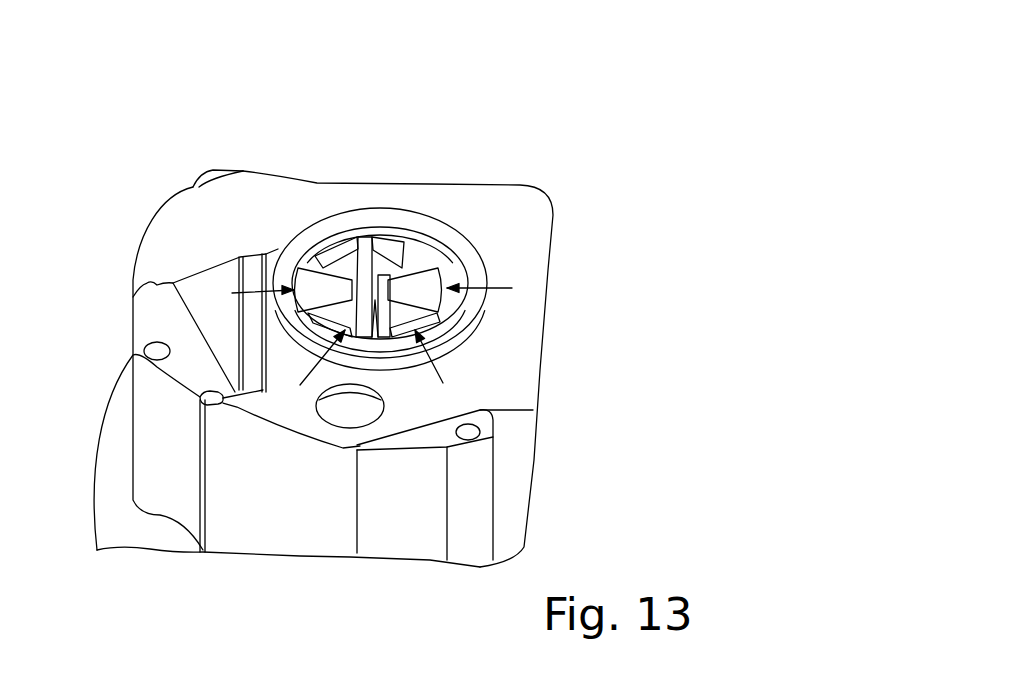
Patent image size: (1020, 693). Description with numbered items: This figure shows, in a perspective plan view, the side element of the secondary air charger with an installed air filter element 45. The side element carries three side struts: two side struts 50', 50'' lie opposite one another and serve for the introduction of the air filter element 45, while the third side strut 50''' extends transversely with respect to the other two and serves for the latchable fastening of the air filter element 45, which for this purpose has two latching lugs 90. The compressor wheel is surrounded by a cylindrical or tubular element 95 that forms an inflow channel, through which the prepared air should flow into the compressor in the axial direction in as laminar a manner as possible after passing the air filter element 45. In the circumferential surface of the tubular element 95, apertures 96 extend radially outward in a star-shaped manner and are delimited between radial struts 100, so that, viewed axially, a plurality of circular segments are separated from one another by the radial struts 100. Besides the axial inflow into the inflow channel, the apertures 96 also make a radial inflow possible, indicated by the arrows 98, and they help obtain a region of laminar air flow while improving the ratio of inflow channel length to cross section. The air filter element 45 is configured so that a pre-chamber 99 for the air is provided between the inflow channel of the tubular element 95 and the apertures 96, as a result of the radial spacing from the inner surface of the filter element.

The air filter element 45 is at (535, 232).
The side strut 50' is at (203, 124).
The side strut 50'' is at (404, 501).
The third side strut 50''' is at (131, 337).
The latching lugs 90 is at (143, 293).
The cylindrical or tubular element 95 is at (460, 338).
The apertures 96 is at (397, 320).
The arrows (radial inflow) 98 is at (336, 248).
The pre-chamber 99 is at (463, 262).
The radial struts 100 is at (400, 245).